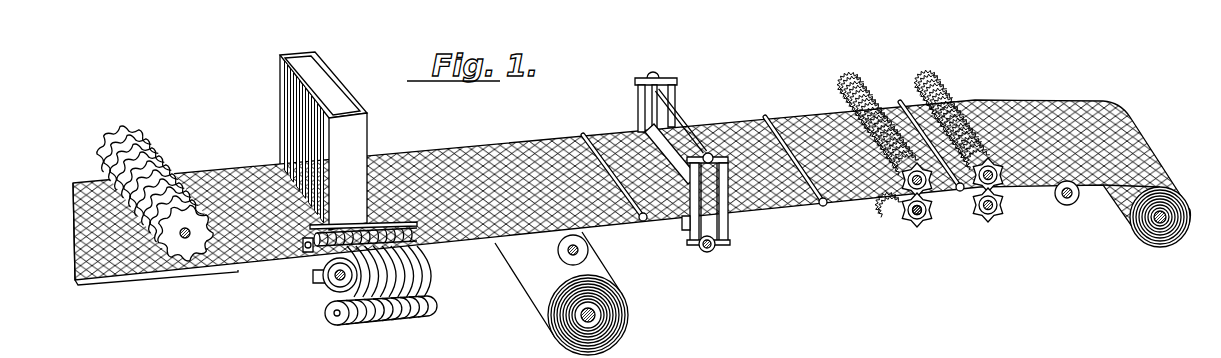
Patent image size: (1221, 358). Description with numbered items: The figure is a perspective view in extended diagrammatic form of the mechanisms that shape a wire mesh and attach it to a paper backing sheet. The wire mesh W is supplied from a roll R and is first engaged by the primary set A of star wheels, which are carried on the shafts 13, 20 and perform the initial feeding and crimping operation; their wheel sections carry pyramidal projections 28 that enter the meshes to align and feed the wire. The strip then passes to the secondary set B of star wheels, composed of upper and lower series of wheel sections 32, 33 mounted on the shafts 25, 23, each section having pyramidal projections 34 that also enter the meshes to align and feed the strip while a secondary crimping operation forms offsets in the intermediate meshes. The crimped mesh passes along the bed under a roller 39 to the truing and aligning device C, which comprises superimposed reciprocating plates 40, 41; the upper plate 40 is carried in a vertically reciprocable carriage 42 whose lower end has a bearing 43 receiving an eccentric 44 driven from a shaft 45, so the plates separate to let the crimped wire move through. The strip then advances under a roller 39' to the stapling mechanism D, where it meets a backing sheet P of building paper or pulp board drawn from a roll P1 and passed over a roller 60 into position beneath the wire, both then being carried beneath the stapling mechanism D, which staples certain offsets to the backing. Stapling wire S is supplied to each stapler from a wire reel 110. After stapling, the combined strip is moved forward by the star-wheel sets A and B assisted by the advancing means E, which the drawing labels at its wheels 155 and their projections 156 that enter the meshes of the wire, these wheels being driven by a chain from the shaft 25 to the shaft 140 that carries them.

The wire mesh W is at (1066, 103).
The advancing means E is at (155, 200).
The roller lobes 155 is at (138, 129).
The roller grooves 156 is at (157, 153).
The shaft 140 is at (183, 237).
The stapling mechanism D is at (389, 120).
The stapling wire S is at (382, 278).
The wire reel 110 is at (419, 325).
The roller 39' is at (599, 167).
The roller 39 is at (775, 149).
The upper plate 40 is at (653, 137).
The carriage 42 is at (639, 72).
The lower plate 41 is at (682, 226).
The bearing 43 is at (706, 252).
The eccentric 44 is at (716, 250).
The shaft 45 is at (700, 249).
The truing and aligning device C is at (669, 171).
The backing sheet P is at (605, 257).
The roll P1 is at (628, 313).
The roller 60 is at (561, 254).
The secondary set of star wheels B is at (871, 157).
The pyramidal projections 34 is at (867, 84).
The upper wheel sections 32 is at (889, 201).
The lower wheel sections 33 is at (905, 223).
The shaft 25 is at (928, 191).
The shaft 23 is at (922, 219).
The primary set of star wheels A is at (969, 143).
The pyramidal projections 28 is at (940, 86).
The shaft 20 is at (996, 181).
The shaft 13 is at (995, 207).
The roll R is at (1108, 232).